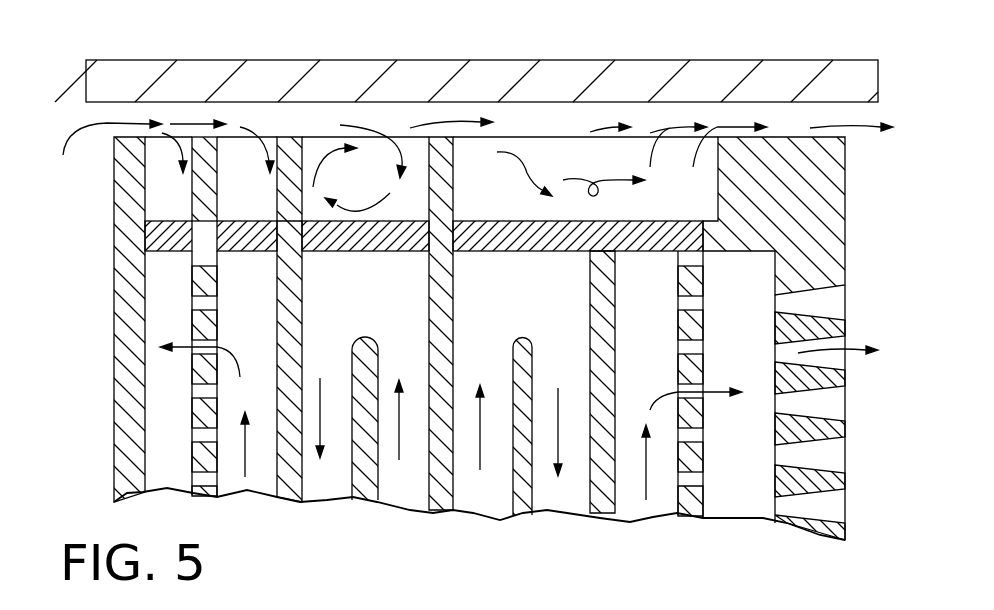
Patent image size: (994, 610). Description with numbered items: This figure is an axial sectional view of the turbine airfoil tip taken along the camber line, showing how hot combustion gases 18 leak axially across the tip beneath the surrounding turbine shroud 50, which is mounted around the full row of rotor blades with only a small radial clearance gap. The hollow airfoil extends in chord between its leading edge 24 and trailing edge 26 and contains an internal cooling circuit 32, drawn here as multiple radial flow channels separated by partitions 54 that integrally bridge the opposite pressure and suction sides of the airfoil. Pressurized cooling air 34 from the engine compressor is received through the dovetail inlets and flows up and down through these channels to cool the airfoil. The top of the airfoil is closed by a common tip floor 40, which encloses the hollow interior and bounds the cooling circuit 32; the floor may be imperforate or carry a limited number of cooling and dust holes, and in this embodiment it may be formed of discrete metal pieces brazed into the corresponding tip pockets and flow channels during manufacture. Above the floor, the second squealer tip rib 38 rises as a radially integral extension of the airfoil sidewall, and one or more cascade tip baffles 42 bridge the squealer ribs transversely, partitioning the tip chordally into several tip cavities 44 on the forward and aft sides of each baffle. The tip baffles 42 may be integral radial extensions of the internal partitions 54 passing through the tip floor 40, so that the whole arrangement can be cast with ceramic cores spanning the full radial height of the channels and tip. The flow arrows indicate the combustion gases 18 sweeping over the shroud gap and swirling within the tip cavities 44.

The combustion gases 18 is at (86, 132).
The leading edge 24 is at (112, 323).
The trailing edge 26 is at (845, 428).
The internal cooling circuit 32 is at (495, 291).
The cooling air 34 is at (322, 395).
The second squealer tip rib 38 is at (538, 137).
The tip floor 40 is at (333, 253).
The tip baffle 42 is at (302, 150).
The tip cavities 44 is at (150, 205).
The turbine shroud 50 is at (777, 60).
The partitions 54 is at (352, 470).